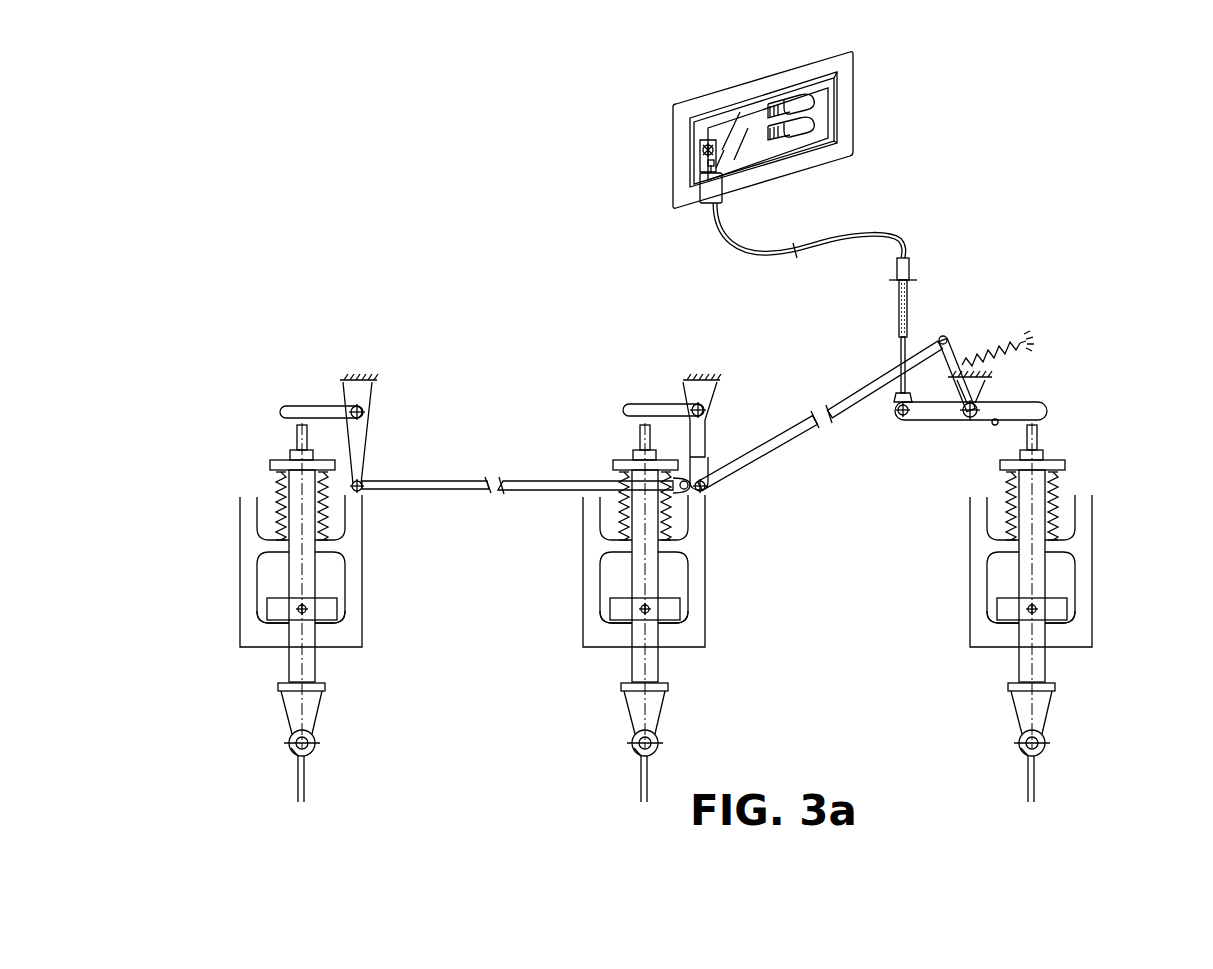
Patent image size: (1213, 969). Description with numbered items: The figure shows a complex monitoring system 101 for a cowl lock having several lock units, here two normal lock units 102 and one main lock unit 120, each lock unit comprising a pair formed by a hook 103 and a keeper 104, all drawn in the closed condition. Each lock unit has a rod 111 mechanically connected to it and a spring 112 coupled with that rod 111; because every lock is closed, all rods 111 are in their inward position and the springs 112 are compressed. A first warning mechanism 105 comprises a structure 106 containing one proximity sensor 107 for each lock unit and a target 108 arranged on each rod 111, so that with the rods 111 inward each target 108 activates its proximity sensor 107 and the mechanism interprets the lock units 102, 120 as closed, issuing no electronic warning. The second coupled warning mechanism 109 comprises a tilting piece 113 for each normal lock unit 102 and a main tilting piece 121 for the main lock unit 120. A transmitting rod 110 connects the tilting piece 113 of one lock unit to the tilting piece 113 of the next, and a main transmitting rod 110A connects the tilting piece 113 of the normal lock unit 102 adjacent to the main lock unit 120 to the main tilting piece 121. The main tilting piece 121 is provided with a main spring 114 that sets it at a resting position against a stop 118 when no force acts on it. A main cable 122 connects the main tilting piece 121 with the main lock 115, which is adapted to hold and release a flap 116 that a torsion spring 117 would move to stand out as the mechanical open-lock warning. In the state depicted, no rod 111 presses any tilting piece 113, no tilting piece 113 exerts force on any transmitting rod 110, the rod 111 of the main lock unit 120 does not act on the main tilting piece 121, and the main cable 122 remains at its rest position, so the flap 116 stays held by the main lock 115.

The complex monitoring system 101 is at (572, 355).
The normal lock unit 102 is at (328, 718).
The hook 103 is at (298, 760).
The keeper 104 is at (293, 745).
The first warning mechanism 105 is at (257, 610).
The structure 106 is at (330, 612).
The proximity sensor 107 is at (293, 622).
The target 108 is at (302, 612).
The second coupled warning mechanism 109 is at (372, 466).
The transmitting rod 110 is at (440, 491).
The main transmitting rod 110A is at (800, 438).
The rod 111 is at (297, 578).
The spring 112 is at (285, 500).
The tilting piece 113 is at (292, 406).
The main spring 114 is at (1003, 338).
The main lock 115 is at (700, 190).
The flap 116 is at (688, 122).
The torsion spring 117 is at (828, 103).
The stop 118 is at (992, 425).
The main lock unit 120 is at (1062, 703).
The main tilting piece 121 is at (1012, 405).
The main cable 122 is at (843, 233).